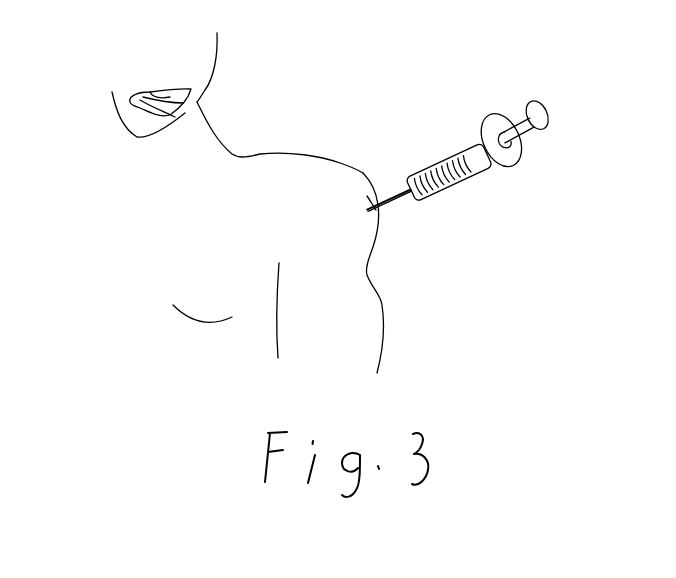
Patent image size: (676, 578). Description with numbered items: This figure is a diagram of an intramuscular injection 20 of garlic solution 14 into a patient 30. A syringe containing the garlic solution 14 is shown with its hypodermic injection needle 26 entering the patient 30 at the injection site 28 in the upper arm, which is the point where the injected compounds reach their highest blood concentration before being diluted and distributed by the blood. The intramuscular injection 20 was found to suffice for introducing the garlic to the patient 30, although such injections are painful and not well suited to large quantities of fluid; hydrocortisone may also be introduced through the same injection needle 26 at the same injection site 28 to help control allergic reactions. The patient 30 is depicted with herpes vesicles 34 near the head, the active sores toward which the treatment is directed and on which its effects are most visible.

The garlic solution 14 is at (438, 163).
The intramuscular injection 20 is at (440, 256).
The injection needle 26 is at (393, 188).
The injection site 28 is at (409, 284).
The patient 30 is at (290, 108).
The herpes vesicles 34 is at (200, 97).